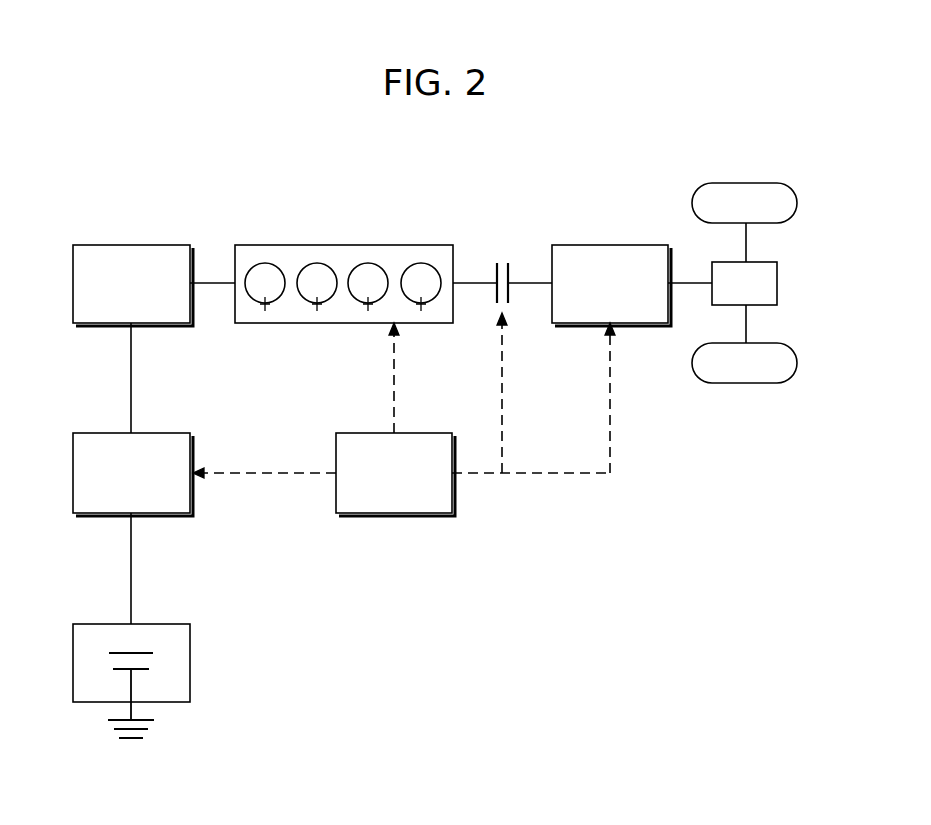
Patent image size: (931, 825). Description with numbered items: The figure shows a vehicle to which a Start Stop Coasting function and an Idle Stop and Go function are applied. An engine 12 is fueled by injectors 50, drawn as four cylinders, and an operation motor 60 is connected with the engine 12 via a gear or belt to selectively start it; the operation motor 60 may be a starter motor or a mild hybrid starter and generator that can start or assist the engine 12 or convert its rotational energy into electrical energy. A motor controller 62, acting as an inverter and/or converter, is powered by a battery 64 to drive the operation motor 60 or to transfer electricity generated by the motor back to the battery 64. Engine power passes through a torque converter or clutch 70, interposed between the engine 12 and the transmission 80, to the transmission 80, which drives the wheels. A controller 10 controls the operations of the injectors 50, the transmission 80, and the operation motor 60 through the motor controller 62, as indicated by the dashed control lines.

The controller 10 is at (393, 516).
The engine 12 is at (343, 245).
The injector 50 is at (368, 307).
The operation motor 60 is at (131, 245).
The motor controller 62 is at (168, 516).
The battery 64 is at (190, 661).
The torque converter 70 is at (501, 246).
The transmission 80 is at (610, 245).